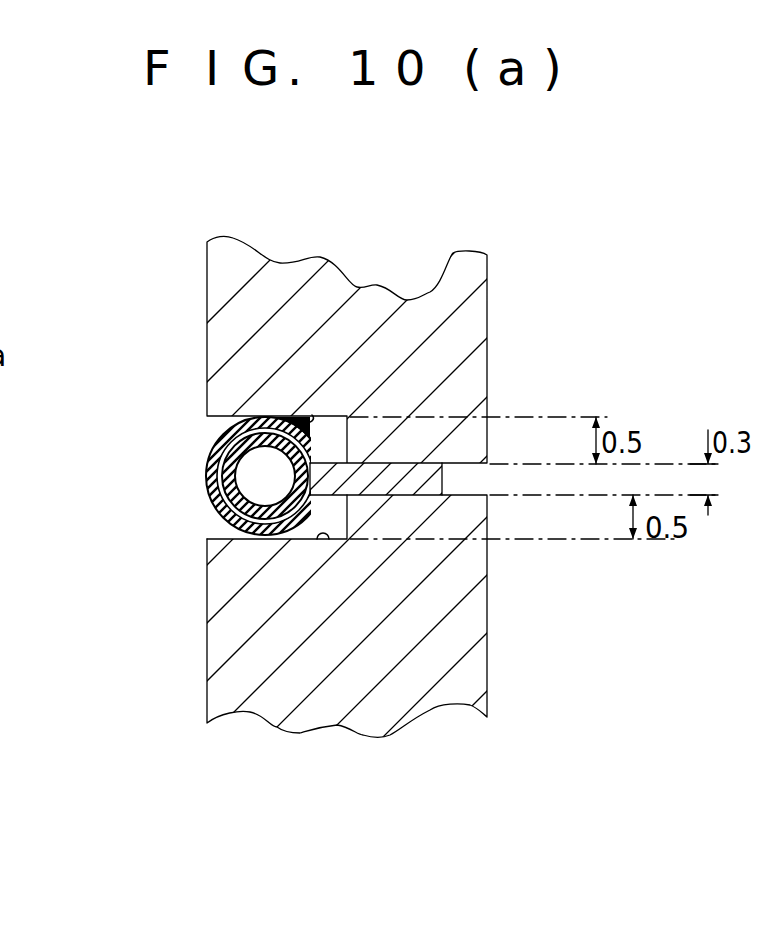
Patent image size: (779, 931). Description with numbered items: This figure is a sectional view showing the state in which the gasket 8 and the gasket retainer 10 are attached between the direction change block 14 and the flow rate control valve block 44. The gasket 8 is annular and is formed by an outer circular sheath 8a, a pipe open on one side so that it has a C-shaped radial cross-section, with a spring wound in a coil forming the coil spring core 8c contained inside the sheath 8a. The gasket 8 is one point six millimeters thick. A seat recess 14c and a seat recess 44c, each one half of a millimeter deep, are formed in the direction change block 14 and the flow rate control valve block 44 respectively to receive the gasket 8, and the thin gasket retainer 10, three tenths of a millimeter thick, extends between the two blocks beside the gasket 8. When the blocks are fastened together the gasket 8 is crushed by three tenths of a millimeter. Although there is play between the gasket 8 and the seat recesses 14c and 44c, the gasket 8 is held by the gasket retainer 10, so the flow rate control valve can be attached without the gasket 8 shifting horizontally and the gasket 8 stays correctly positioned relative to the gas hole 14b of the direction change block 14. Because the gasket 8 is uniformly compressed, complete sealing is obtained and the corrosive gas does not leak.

The flow rate control valve block 44 is at (230, 276).
The seat recess 44c is at (310, 418).
The gasket 8 is at (247, 342).
The outer circular sheath 8a is at (318, 452).
The coil spring core 8c is at (220, 443).
The direction change block 14 is at (253, 657).
The gas hole 14b is at (207, 570).
The seat recess 14c is at (322, 539).
The gasket retainer 10 is at (354, 478).